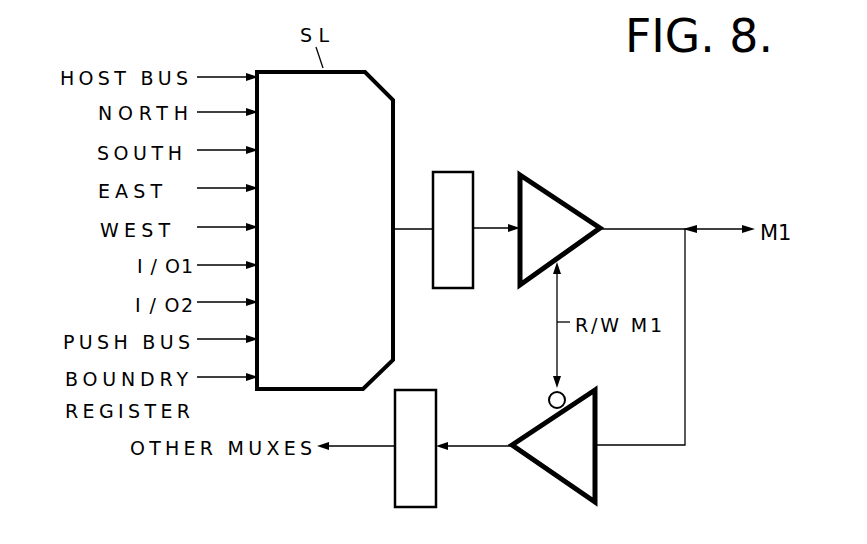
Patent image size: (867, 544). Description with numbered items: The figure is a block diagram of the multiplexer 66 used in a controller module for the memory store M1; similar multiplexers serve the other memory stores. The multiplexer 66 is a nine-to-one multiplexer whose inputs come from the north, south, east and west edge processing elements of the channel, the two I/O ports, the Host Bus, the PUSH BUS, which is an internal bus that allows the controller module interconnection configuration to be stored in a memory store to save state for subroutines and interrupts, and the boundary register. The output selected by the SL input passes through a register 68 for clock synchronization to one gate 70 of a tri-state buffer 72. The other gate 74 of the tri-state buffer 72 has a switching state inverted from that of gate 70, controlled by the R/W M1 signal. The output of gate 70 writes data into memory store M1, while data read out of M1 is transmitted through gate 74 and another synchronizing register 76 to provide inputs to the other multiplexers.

The multiplexer 66 is at (382, 82).
The register 68 is at (452, 170).
The gate 70 is at (538, 182).
The tri-state buffer 72 is at (656, 381).
The gate 74 is at (563, 480).
The synchronizing register 76 is at (436, 505).